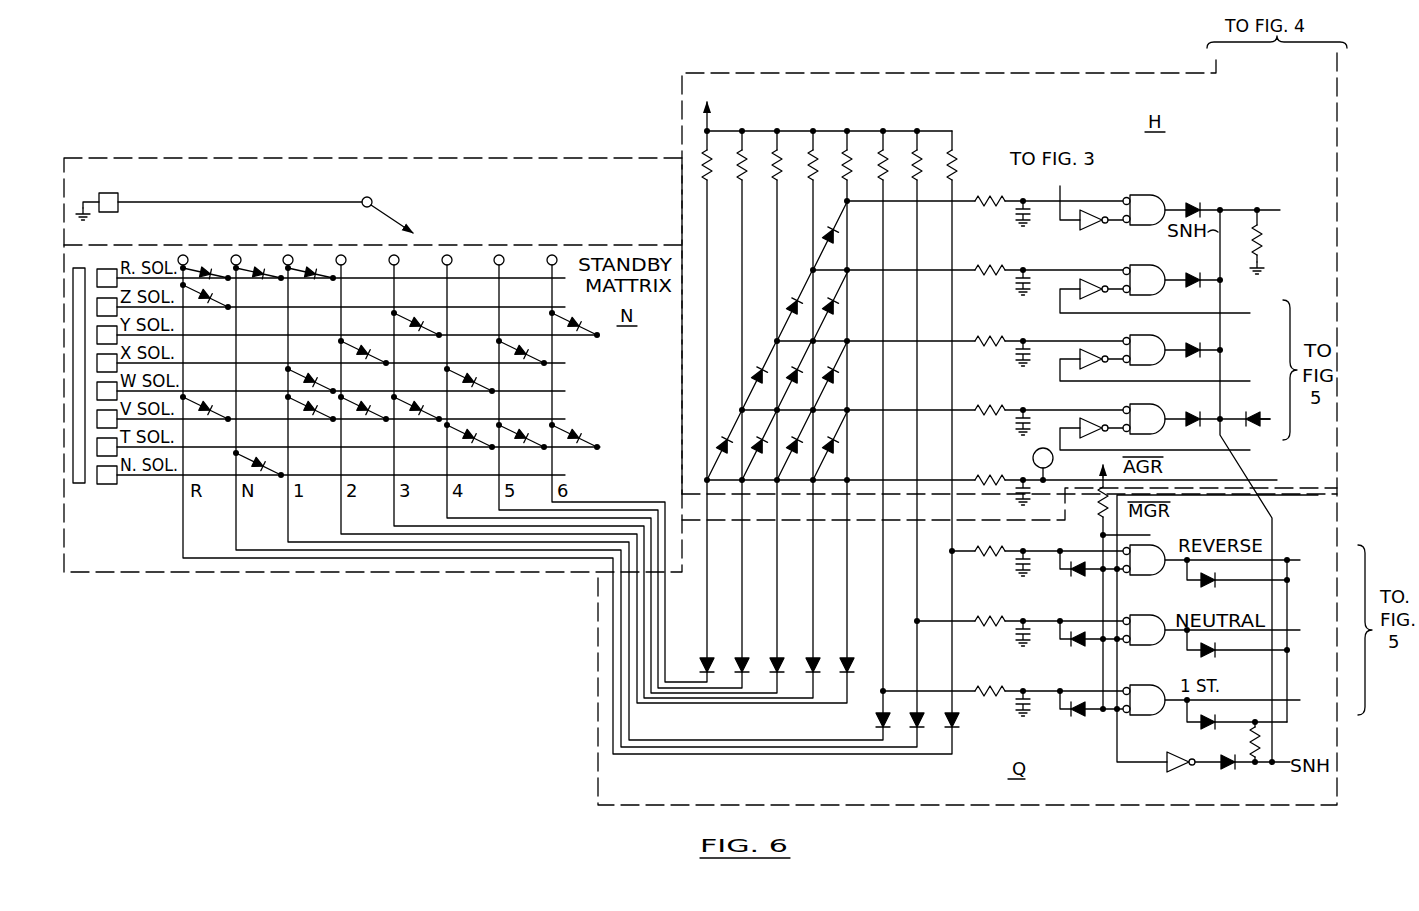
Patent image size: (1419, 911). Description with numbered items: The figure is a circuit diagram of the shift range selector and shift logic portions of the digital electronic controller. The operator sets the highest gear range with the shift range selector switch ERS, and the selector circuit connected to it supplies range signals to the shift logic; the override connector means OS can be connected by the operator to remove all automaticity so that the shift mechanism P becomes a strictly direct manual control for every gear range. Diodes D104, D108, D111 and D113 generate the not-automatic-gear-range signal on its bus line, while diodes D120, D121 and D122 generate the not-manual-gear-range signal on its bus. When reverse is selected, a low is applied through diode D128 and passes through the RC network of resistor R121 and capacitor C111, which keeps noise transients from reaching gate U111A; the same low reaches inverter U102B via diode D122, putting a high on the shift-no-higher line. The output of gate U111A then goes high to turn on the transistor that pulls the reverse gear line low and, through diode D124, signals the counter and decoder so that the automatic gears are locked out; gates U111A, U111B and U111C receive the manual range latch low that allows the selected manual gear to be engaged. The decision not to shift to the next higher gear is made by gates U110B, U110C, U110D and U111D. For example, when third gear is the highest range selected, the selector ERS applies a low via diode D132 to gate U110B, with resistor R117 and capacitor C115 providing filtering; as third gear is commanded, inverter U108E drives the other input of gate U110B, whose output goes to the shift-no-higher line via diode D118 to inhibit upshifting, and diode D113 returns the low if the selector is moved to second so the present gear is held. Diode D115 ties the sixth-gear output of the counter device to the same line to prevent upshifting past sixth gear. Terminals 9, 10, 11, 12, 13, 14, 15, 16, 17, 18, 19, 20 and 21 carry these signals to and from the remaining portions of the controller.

The first gear output terminal 9 is at (1239, 701).
The neutral output terminal 10 is at (1245, 631).
The reverse diode output terminal 11 is at (1298, 641).
The reverse output terminal 12 is at (1244, 561).
The connection to FIG. 4 13 is at (1308, 502).
The MGR input terminal 14 is at (1229, 625).
The AGR terminal 15 is at (1003, 483).
The U110C input terminal 16 is at (1167, 445).
The D115 terminal 17 is at (1276, 421).
The U110D input terminal 18 is at (1167, 376).
The U108E input terminal 19 is at (1167, 307).
The U111D output terminal 20 is at (1252, 231).
The input terminal from FIG. 3 21 is at (1066, 193).
The shift range selector switch ERS is at (394, 213).
The override connector means OS is at (82, 486).
The automatic gear shift mechanism P is at (1043, 465).
The diode D104 is at (725, 441).
The diode D108 is at (760, 372).
The diode D111 is at (794, 304).
The diode D113 is at (828, 232).
The diode D115 is at (1246, 406).
The diode D118 is at (1194, 268).
The diode D120 is at (1083, 714).
The diode D121 is at (1083, 645).
The diode D122 is at (1083, 576).
The diode D124 is at (1236, 584).
The diode D128 is at (942, 729).
The diode D132 is at (813, 657).
The resistor R117 is at (983, 260).
The resistor R121 is at (1036, 542).
The capacitor C111 is at (1013, 574).
The capacitor C115 is at (1011, 283).
The inverter U102B is at (1219, 772).
The inverter U108E is at (1102, 323).
The gate U110B is at (1148, 270).
The gate U110C is at (1140, 411).
The gate U110D is at (1144, 343).
The gate U111A is at (1149, 568).
The gate U111B is at (1148, 640).
The gate U111C is at (1148, 709).
The gate U111D is at (1142, 200).